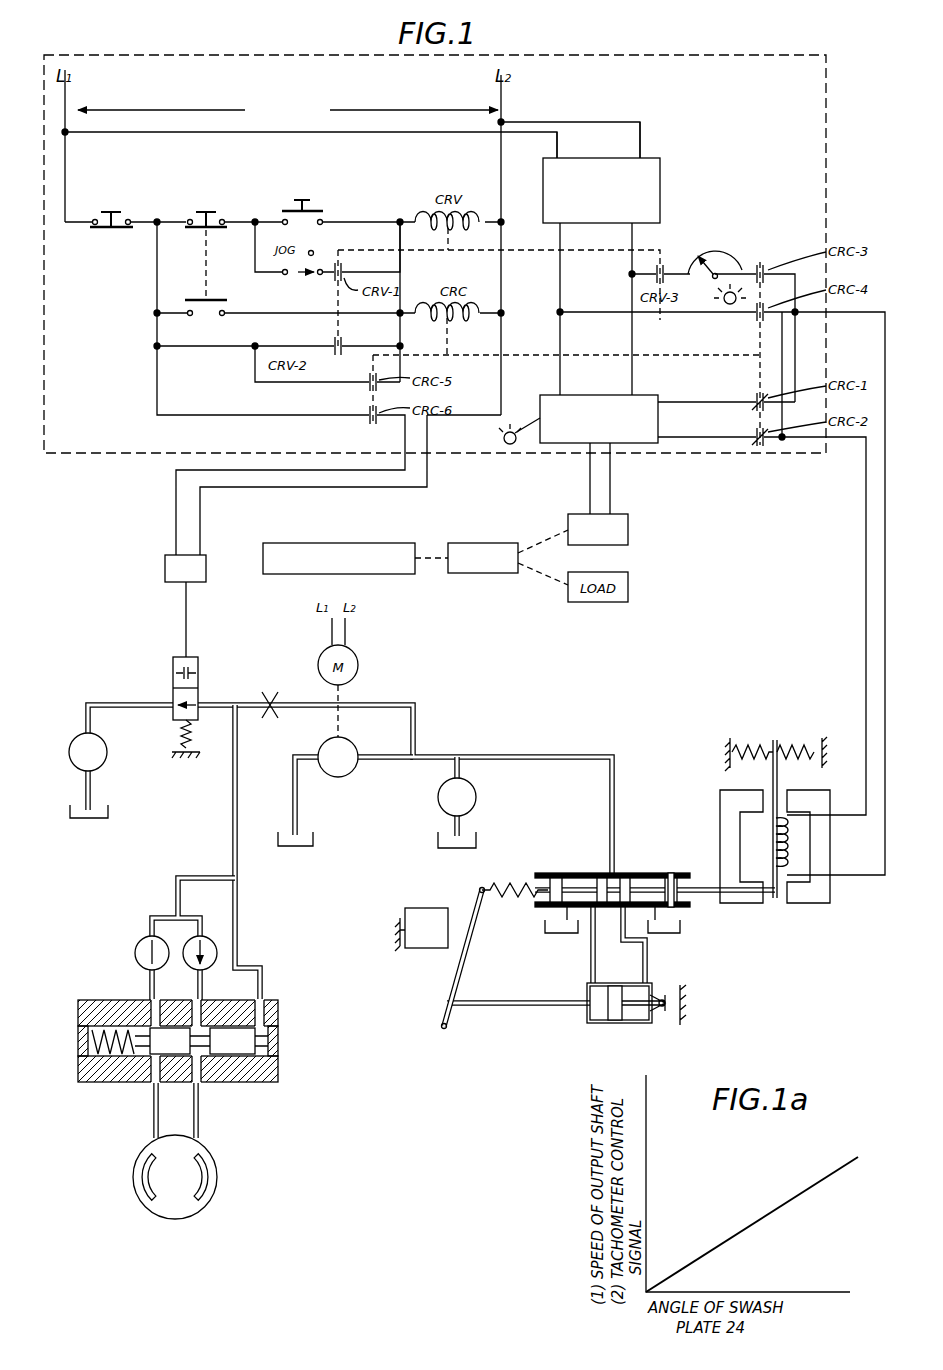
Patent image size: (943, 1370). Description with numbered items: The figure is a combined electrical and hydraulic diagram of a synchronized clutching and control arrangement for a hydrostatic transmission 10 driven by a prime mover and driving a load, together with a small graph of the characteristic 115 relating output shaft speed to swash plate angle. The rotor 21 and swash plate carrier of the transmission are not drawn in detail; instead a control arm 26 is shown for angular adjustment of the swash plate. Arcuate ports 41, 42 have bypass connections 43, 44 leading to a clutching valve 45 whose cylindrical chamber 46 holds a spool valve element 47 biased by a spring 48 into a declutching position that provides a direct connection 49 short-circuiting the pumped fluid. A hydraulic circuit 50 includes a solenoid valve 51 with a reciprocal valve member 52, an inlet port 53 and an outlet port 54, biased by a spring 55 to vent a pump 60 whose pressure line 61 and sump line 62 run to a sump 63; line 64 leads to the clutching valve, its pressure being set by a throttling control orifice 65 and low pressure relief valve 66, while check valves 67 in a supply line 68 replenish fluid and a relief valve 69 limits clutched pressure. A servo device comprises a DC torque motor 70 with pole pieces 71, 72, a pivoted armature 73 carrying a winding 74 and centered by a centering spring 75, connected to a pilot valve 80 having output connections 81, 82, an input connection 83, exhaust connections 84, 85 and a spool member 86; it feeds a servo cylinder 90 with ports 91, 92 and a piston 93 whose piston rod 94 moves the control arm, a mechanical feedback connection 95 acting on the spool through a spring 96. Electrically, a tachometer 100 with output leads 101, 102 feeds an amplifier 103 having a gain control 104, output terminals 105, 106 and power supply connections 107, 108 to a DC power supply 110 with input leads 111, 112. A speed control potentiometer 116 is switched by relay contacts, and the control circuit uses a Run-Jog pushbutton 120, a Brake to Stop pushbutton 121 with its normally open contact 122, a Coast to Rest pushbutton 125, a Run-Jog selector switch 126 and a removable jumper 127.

In FIG. 1, the hydrostatic transmission 10 is at (483, 575).
In FIG. 1, the rotor 21 is at (425, 948).
In FIG. 1, the control arm 26 is at (392, 948).
In FIG. 1, the arcuate port 41 is at (152, 1196).
In FIG. 1, the arcuate port 42 is at (197, 1196).
In FIG. 1, the bypass connection 43 is at (150, 1120).
In FIG. 1, the bypass connection 44 is at (200, 1124).
In FIG. 1, the clutching valve 45 is at (80, 1012).
In FIG. 1, the cylindrical chamber 46 is at (275, 1066).
In FIG. 1, the spool valve element 47 is at (228, 1040).
In FIG. 1, the spring 48 is at (92, 1043).
In FIG. 1, the direct connection 49 is at (168, 1060).
In FIG. 1, the hydraulic circuit 50 is at (118, 875).
In FIG. 1, the solenoid valve 51 is at (165, 568).
In FIG. 1, the reciprocal valve member 52 is at (200, 662).
In FIG. 1, the inlet port 53 is at (198, 700).
In FIG. 1, the outlet port 54 is at (170, 702).
In FIG. 1, the spring 55 is at (178, 745).
In FIG. 1, the pump 60 is at (332, 778).
In FIG. 1, the pressure line 61 is at (413, 730).
In FIG. 1, the sump line 62 is at (292, 795).
In FIG. 1, the sump 63 is at (92, 818).
In FIG. 1, the line 64 is at (238, 943).
In FIG. 1, the throttling control orifice 65 is at (270, 690).
In FIG. 1, the low pressure relief valve 66 is at (70, 745).
In FIG. 1, the check valve 67 is at (138, 940).
In FIG. 1, the supply line 68 is at (190, 878).
In FIG. 1, the relief valve 69 is at (438, 797).
In FIG. 1, the DC torque motor 70 is at (800, 907).
In FIG. 1, the pole piece 71 is at (720, 842).
In FIG. 1, the pole piece 72 is at (830, 840).
In FIG. 1, the pivoted armature 73 is at (772, 775).
In FIG. 1, the winding 74 is at (790, 835).
In FIG. 1, the centering spring 75 is at (795, 745).
In FIG. 1, the pilot valve 80 is at (700, 905).
In FIG. 1, the output connection 81 is at (590, 930).
In FIG. 1, the output connection 82 is at (623, 945).
In FIG. 1, the input connection 83 is at (612, 873).
In FIG. 1, the exhaust connection 84 is at (560, 915).
In FIG. 1, the exhaust connection 85 is at (662, 912).
In FIG. 1, the spool member 86 is at (670, 883).
In FIG. 1, the servo cylinder 90 is at (654, 1028).
In FIG. 1, the port 91 is at (590, 975).
In FIG. 1, the port 92 is at (652, 978).
In FIG. 1, the piston 93 is at (612, 1020).
In FIG. 1, the piston rod 94 is at (512, 1005).
In FIG. 1, the mechanical feedback connection 95 is at (466, 945).
In FIG. 1, the spring 96 is at (512, 886).
In FIG. 1, the tachometer 100 is at (628, 530).
In FIG. 1, the output lead 101 is at (585, 450).
In FIG. 1, the output lead 102 is at (614, 452).
In FIG. 1, the amplifier 103 is at (655, 393).
In FIG. 1, the gain control 104 is at (503, 441).
In FIG. 1, the output terminal 105 is at (690, 440).
In FIG. 1, the output terminal 106 is at (696, 406).
In FIG. 1, the power supply connection 107 is at (557, 378).
In FIG. 1, the power supply connection 108 is at (628, 375).
In FIG. 1, the DC power supply 110 is at (660, 196).
In FIG. 1, the input lead 111 is at (640, 147).
In FIG. 1, the input lead 112 is at (640, 128).
In FIG. 1, the characteristic 115 is at (288, 110).
In FIG. 1A, the characteristic 115 is at (760, 1215).
In FIG. 1, the speed control potentiometer 116 is at (735, 248).
In FIG. 1, the Run-Jog pushbutton 120 is at (333, 208).
In FIG. 1, the Brake to Stop pushbutton 121 is at (190, 240).
In FIG. 1, the normally open contact 122 is at (208, 322).
In FIG. 1, the Coast to Rest pushbutton 125 is at (120, 240).
In FIG. 1, the Run-Jog selector switch 126 is at (290, 280).
In FIG. 1, the jumper 127 is at (255, 376).